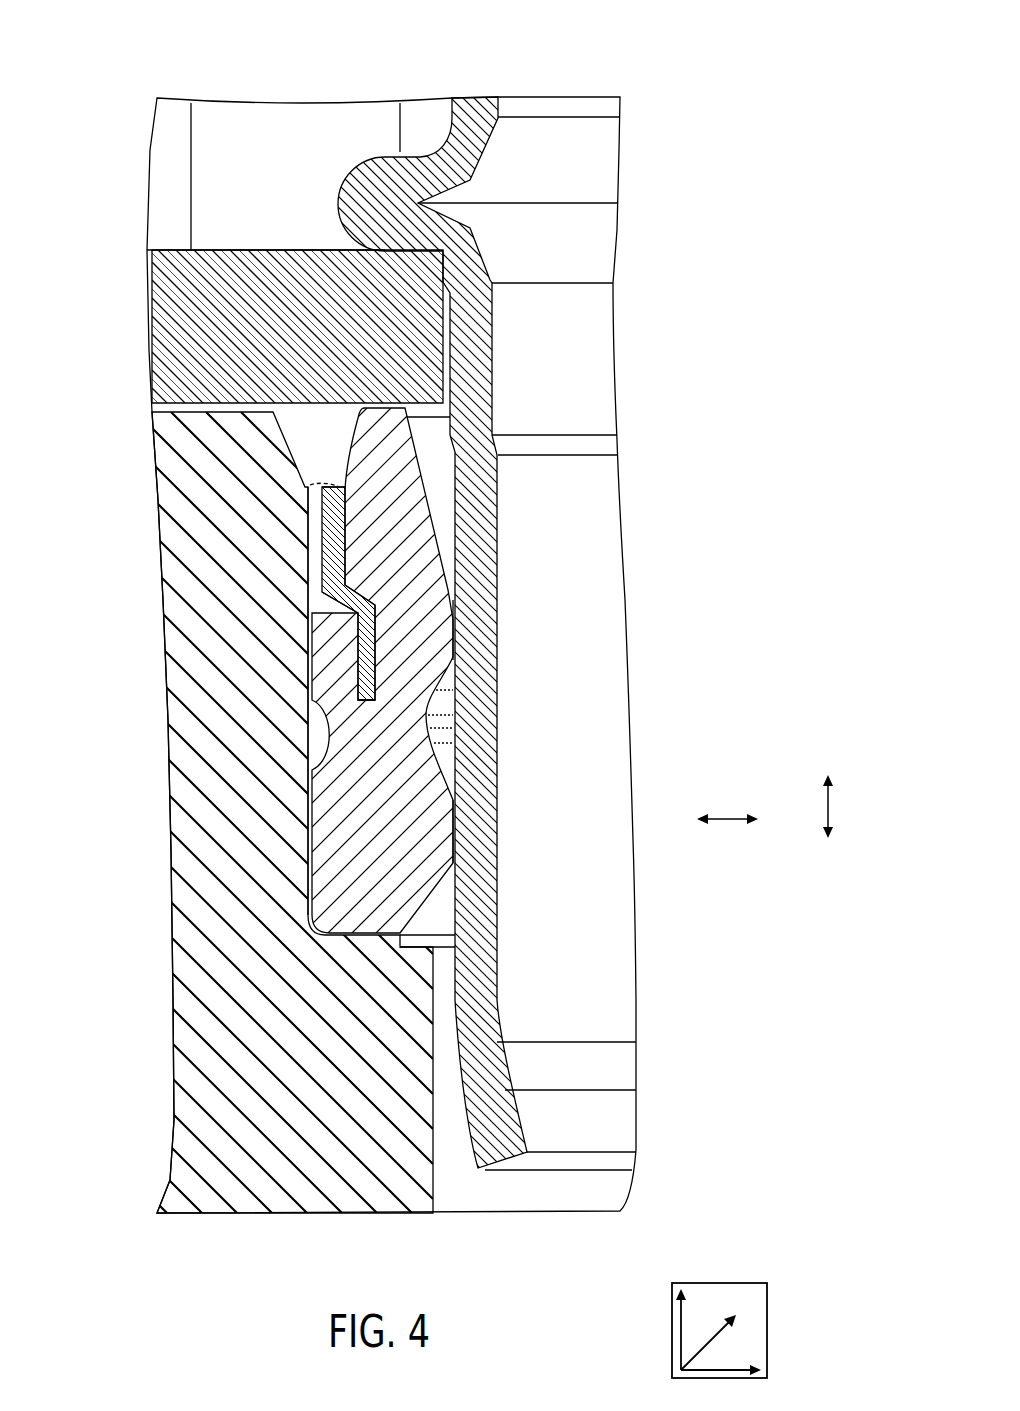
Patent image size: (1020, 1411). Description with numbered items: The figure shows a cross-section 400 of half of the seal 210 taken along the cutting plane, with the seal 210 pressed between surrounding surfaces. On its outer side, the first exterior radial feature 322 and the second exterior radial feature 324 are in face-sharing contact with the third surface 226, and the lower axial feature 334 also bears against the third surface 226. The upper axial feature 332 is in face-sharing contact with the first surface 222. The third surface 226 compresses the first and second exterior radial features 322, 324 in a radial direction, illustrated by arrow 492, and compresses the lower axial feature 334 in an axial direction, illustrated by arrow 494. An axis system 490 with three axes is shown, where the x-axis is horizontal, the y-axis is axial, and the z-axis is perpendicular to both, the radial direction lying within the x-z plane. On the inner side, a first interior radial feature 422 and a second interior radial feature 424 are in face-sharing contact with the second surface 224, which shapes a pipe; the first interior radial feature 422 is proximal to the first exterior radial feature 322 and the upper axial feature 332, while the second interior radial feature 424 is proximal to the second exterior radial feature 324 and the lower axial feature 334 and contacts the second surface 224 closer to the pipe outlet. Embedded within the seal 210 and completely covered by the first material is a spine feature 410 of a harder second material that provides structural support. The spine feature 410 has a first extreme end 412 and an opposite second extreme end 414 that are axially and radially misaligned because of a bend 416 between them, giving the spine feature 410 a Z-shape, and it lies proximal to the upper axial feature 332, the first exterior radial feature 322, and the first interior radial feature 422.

The cross-section 400 is at (698, 29).
The seal 210 is at (284, 735).
The first surface 222 is at (150, 312).
The second surface 224 is at (494, 860).
The third surface 226 is at (170, 962).
The first exterior radial feature 322 is at (309, 630).
The second exterior radial feature 324 is at (308, 830).
The upper axial feature 332 is at (400, 407).
The lower axial feature 334 is at (368, 937).
The spine feature 410 is at (390, 708).
The first extreme end 412 is at (337, 498).
The second extreme end 414 is at (372, 700).
The bend 416 is at (340, 608).
The first interior radial feature 422 is at (455, 634).
The second interior radial feature 424 is at (455, 817).
The axis system 490 is at (767, 1302).
The arrow 492 is at (722, 822).
The arrow 494 is at (828, 800).